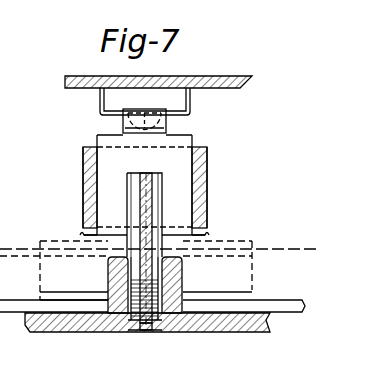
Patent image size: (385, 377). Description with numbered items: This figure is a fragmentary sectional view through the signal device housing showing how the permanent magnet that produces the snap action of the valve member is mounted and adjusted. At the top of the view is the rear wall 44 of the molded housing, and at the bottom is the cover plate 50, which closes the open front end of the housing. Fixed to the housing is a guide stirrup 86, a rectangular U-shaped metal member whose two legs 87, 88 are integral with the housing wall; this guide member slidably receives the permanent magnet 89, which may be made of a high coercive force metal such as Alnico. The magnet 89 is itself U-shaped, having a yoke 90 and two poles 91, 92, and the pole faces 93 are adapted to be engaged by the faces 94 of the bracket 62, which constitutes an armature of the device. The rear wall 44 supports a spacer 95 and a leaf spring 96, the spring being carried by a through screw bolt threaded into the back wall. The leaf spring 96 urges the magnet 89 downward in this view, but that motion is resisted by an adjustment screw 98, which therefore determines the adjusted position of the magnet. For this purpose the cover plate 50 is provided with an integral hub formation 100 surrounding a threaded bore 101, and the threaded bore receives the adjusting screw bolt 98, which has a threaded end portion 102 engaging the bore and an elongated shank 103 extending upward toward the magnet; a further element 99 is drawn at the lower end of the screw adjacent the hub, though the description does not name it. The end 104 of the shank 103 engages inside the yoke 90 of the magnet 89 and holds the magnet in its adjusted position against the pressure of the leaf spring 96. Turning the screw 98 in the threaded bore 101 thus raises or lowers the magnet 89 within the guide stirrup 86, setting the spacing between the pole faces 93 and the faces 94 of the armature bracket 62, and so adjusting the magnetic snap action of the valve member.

The rear wall 44 is at (205, 76).
The cover plate 50 is at (222, 332).
The bracket 62 is at (42, 296).
The guide stirrup 86 is at (210, 158).
The leg 87 is at (83, 190).
The leg 88 is at (207, 186).
The permanent magnet 89 is at (176, 165).
The yoke 90 is at (124, 160).
The pole 91 is at (102, 208).
The pole 92 is at (196, 218).
The pole faces 93 is at (90, 236).
The faces 94 is at (40, 241).
The spacer 95 is at (104, 98).
The leaf spring 96 is at (166, 121).
The adjustment screw 98 is at (138, 325).
The nut 99 is at (170, 322).
The hub formation 100 is at (183, 279).
The threaded bore 101 is at (134, 332).
The threaded end portion 102 is at (156, 324).
The shank 103 is at (152, 207).
The end of shank 104 is at (146, 172).